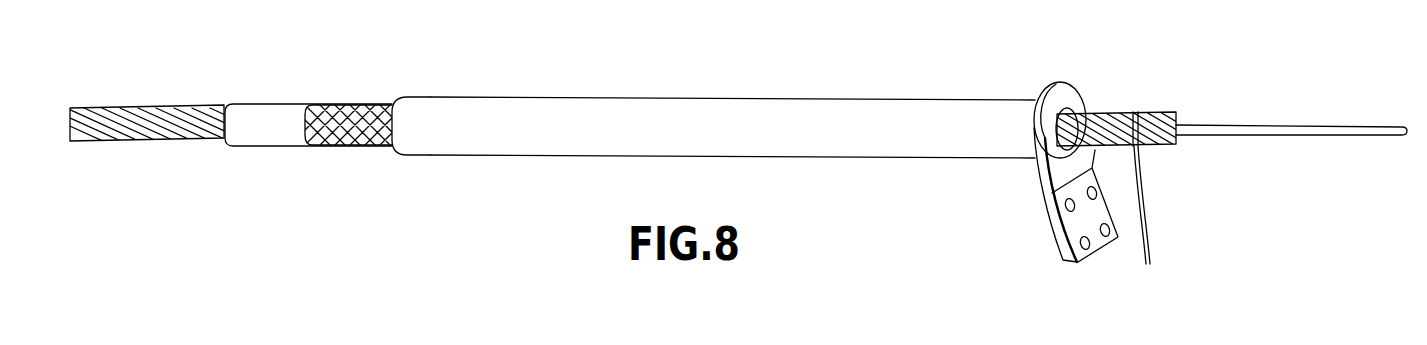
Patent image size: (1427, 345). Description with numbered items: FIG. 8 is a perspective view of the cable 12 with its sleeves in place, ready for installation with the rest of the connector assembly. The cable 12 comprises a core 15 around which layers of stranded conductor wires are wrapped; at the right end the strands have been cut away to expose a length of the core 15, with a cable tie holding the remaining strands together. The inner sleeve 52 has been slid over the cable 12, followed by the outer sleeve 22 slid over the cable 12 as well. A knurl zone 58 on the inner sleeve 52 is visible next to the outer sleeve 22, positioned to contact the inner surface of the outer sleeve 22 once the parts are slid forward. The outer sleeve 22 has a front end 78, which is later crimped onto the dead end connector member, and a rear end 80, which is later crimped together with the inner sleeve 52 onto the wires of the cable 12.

The cable 12 is at (123, 112).
The core 15 is at (1322, 132).
The outer sleeve 22 is at (700, 98).
The inner sleeve 52 is at (250, 103).
The knurl zone 58 is at (319, 83).
The front end 78 is at (975, 110).
The rear end 80 is at (447, 97).